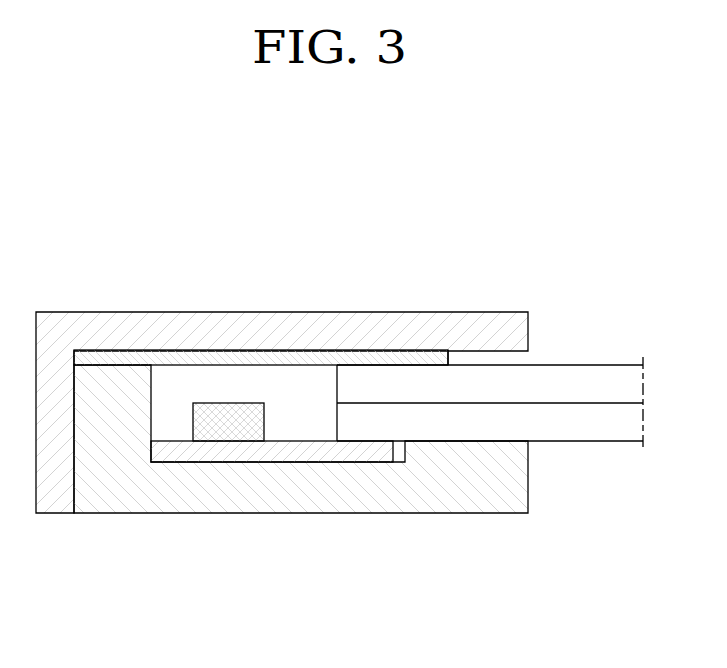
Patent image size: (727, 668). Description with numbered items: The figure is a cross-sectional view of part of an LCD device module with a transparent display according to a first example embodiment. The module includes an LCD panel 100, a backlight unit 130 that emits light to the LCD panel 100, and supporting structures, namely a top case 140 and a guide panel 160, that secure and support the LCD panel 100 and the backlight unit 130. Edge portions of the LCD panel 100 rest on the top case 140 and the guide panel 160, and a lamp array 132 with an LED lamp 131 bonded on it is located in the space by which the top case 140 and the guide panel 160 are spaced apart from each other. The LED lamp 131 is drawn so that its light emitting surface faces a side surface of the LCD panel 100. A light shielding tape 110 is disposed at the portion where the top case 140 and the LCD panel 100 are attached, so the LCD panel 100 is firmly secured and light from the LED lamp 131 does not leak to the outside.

The LCD panel 100 is at (595, 358).
The light shielding tape 110 is at (260, 355).
The backlight unit 130 is at (272, 516).
The LED lamp 131 is at (234, 432).
The lamp array 132 is at (192, 452).
The top case 140 is at (152, 320).
The guide panel 160 is at (352, 503).